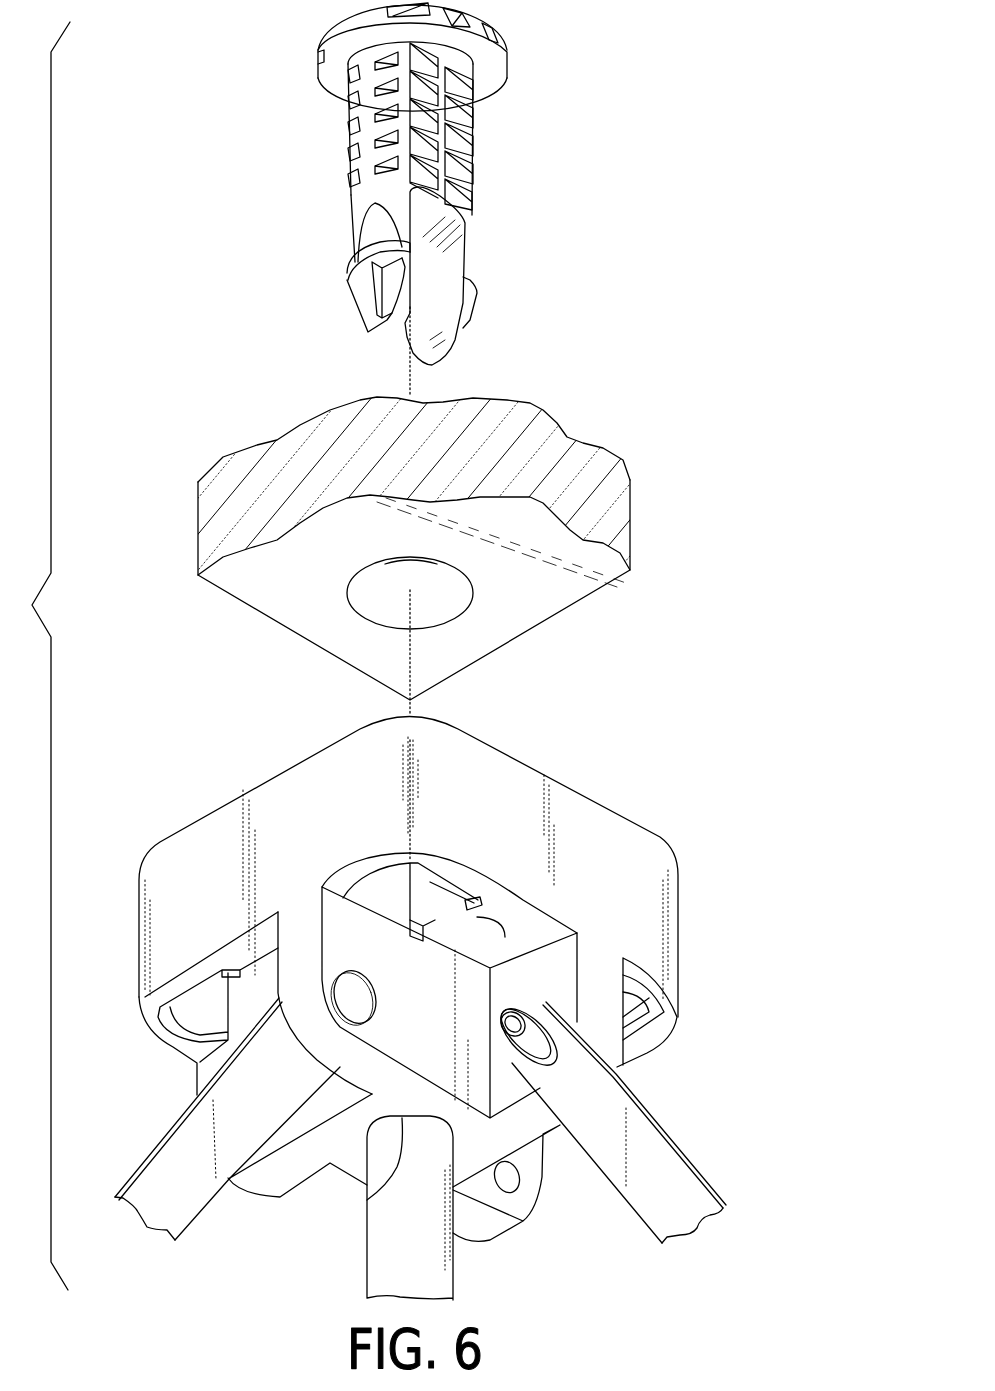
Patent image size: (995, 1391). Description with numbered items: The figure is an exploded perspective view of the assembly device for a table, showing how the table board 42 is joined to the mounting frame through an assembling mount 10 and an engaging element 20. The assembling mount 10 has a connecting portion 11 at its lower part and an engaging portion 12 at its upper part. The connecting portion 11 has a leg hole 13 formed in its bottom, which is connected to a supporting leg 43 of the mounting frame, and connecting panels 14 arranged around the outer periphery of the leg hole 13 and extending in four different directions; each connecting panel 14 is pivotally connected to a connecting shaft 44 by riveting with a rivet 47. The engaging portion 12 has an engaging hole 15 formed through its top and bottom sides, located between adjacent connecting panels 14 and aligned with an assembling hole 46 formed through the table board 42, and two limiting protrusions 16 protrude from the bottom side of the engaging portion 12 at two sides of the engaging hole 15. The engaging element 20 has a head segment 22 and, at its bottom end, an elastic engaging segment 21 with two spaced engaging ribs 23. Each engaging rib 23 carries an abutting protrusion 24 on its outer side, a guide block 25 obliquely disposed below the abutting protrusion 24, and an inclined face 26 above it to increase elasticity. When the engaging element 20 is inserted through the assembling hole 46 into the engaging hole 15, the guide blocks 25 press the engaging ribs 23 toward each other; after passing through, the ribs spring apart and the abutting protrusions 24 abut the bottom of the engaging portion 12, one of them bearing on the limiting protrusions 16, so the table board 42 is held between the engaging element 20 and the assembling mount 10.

The assembling mount 10 is at (699, 784).
The connecting portion 11 is at (514, 1239).
The engaging portion 12 is at (190, 809).
The leg hole 13 is at (367, 1202).
The connecting panel 14 is at (603, 1028).
The engaging hole 15 is at (389, 886).
The limiting protrusion 16 is at (415, 940).
The engaging element 20 is at (547, 122).
The elastic engaging segment 21 is at (337, 143).
The head segment 22 is at (355, 18).
The engaging rib 23 is at (327, 289).
The abutting protrusion 24 is at (372, 248).
The guide block 25 is at (370, 306).
The inclined face 26 is at (372, 226).
The table board 42 is at (588, 616).
The supporting leg 43 is at (390, 1258).
The connecting shaft 44 is at (167, 1175).
The assembling hole 46 is at (456, 628).
The rivet 47 is at (353, 982).